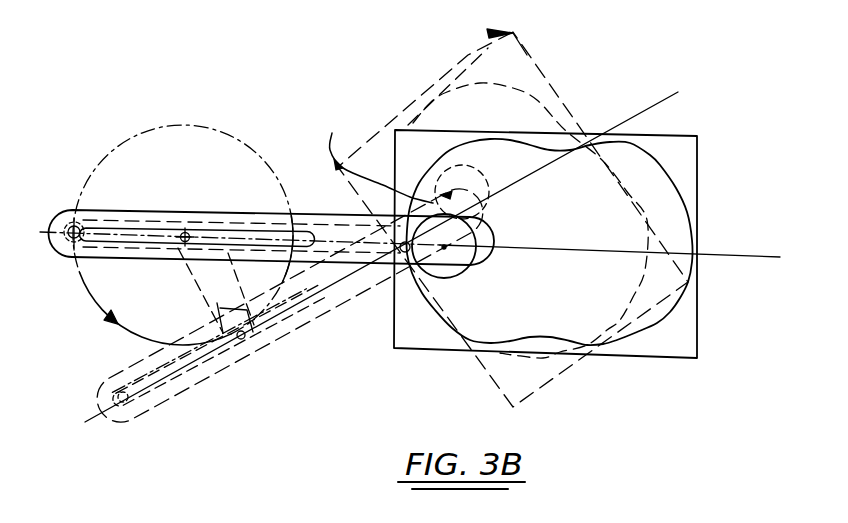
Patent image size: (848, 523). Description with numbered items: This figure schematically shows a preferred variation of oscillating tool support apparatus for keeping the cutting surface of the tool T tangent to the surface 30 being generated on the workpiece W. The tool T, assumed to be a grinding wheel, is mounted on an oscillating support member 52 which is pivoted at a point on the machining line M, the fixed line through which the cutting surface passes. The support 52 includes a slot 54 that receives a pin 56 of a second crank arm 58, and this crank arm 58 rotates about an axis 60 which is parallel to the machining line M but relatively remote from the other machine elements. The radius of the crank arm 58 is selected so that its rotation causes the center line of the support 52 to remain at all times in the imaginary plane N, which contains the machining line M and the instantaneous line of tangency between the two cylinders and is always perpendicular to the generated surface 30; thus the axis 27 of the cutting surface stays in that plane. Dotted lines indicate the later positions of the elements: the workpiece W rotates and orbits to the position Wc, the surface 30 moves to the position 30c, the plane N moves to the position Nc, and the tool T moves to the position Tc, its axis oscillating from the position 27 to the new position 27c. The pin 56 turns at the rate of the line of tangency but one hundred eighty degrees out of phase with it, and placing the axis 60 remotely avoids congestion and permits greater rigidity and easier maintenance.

The oscillating support member 52 is at (298, 216).
The slot 54 is at (256, 242).
The pin 56 is at (78, 226).
The crank arm 58 is at (160, 257).
The axis 60 is at (186, 233).
The axis of the cutting surface of tool 27 is at (498, 243).
The axis of the cutting surface in new position 27c is at (448, 194).
The generated surface 30 is at (662, 163).
The generated surface in new position 30c is at (545, 96).
The tool T is at (448, 270).
The tool in new position Tc is at (462, 186).
The workpiece W is at (697, 170).
The workpiece in new position Wc is at (545, 86).
The imaginary plane N is at (776, 239).
The imaginary plane in new position Nc is at (638, 112).
The machining line M is at (373, 156).